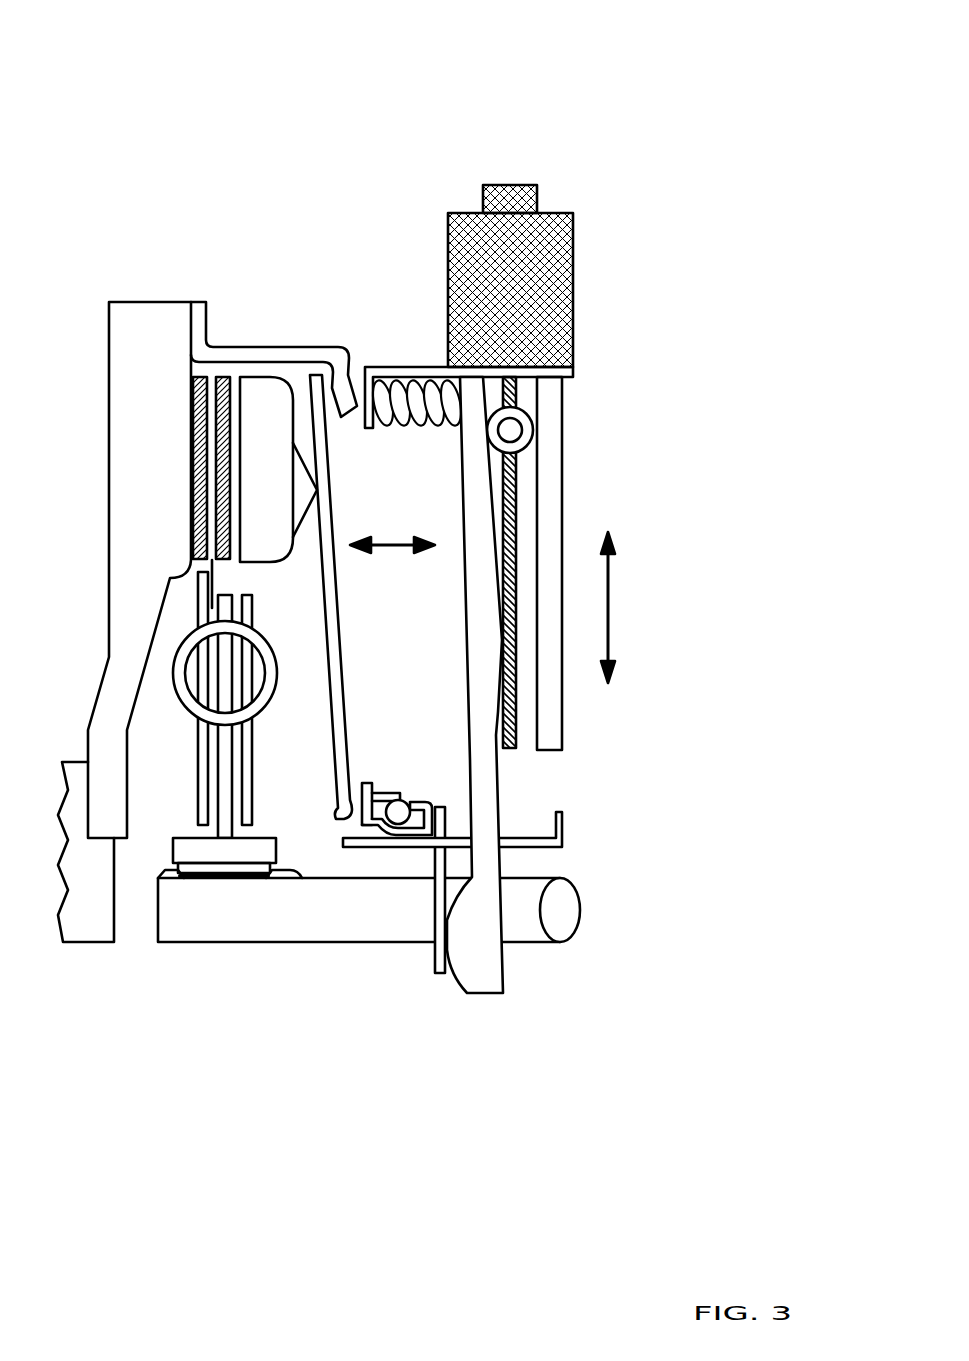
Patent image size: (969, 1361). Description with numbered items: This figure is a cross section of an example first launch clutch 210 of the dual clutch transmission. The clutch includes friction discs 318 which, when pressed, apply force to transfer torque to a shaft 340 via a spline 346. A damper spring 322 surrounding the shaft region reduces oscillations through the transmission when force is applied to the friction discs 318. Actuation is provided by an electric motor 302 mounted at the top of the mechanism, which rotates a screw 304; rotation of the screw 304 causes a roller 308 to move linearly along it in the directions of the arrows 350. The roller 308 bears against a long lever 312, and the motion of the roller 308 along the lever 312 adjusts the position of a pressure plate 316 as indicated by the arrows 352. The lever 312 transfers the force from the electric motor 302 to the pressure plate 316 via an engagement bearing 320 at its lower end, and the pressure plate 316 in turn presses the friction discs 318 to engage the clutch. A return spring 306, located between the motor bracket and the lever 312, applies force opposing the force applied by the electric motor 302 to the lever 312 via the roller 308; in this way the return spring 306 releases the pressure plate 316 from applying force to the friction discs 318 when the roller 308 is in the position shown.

The first launch clutch 210 is at (596, 45).
The electric motor 302 is at (573, 278).
The screw 304 is at (512, 750).
The return spring 306 is at (430, 428).
The roller 308 is at (532, 434).
The lever 312 is at (480, 995).
The pressure plate 316 is at (286, 459).
The friction discs 318 is at (193, 451).
The engagement bearing 320 is at (399, 805).
The damper spring 322 is at (270, 702).
The shaft 340 is at (187, 943).
The spline 346 is at (275, 837).
The arrows 350 is at (608, 583).
The arrows 352 is at (398, 545).